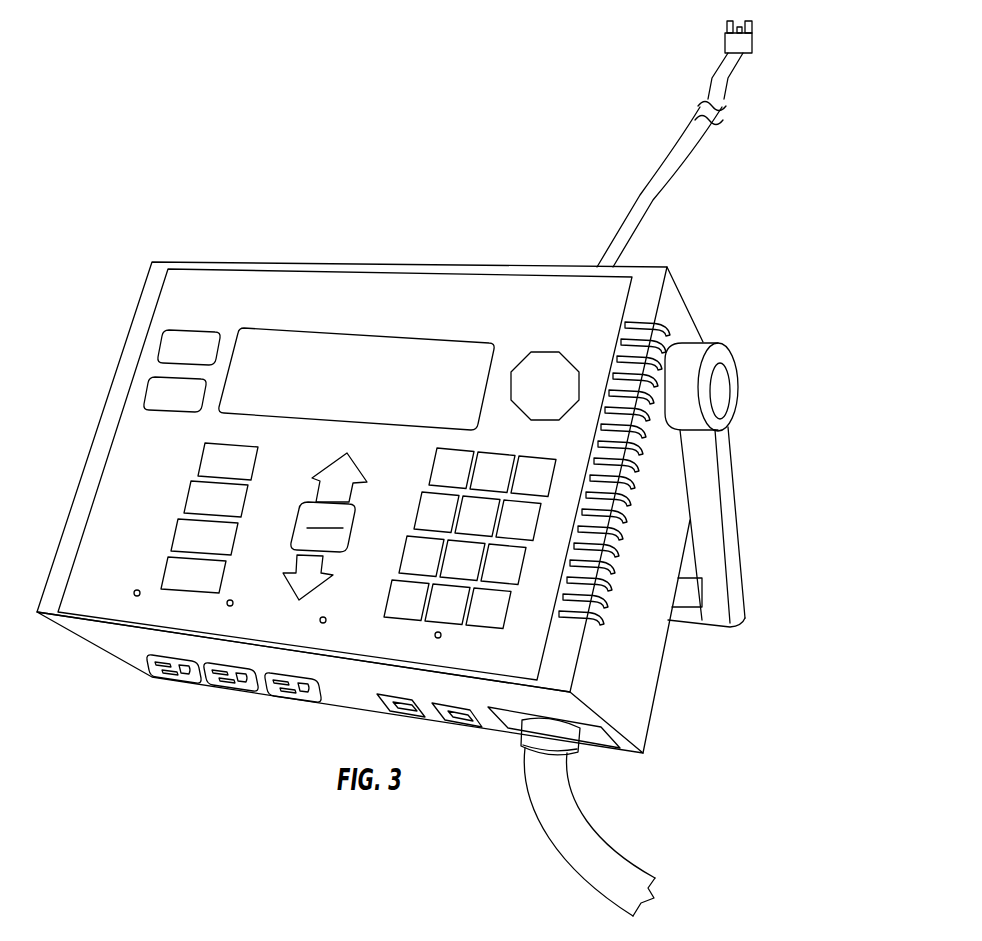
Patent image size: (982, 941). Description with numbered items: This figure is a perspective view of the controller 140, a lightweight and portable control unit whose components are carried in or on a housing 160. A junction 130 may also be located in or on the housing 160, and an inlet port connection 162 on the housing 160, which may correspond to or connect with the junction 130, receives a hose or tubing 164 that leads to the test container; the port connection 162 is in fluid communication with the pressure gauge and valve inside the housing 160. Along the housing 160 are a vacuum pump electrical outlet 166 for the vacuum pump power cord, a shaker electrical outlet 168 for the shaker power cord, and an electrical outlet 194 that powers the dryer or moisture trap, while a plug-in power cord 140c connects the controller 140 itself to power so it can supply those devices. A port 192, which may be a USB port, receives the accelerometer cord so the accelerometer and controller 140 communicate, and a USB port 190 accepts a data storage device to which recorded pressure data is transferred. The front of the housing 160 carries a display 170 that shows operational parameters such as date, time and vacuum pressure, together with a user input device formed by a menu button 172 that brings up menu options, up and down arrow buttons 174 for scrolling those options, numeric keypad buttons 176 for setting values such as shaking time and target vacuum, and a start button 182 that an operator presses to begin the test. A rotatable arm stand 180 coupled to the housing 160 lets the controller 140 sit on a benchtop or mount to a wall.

The junction 130 is at (562, 718).
The controller 140 is at (524, 238).
The plug-in power cord 140c is at (685, 182).
The housing 160 is at (648, 635).
The inlet port connection 162 is at (577, 755).
The hose or tubing 164 is at (537, 847).
The vacuum pump electrical outlet 166 is at (145, 677).
The shaker electrical outlet 168 is at (205, 693).
The display 170 is at (270, 328).
The menu button 172 is at (202, 448).
The up and down arrow buttons 174 is at (288, 577).
The numeric keypad buttons 176 is at (552, 549).
The rotatable arm stand 180 is at (735, 481).
The start button 182 is at (347, 538).
The USB port 190 is at (481, 729).
The port 192 is at (418, 714).
The electrical outlet 194 is at (301, 710).